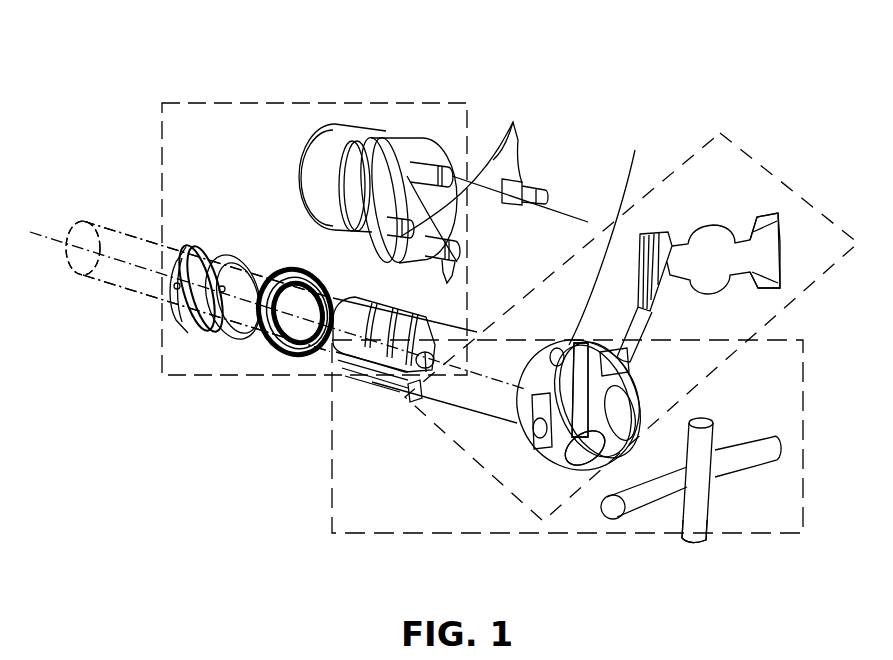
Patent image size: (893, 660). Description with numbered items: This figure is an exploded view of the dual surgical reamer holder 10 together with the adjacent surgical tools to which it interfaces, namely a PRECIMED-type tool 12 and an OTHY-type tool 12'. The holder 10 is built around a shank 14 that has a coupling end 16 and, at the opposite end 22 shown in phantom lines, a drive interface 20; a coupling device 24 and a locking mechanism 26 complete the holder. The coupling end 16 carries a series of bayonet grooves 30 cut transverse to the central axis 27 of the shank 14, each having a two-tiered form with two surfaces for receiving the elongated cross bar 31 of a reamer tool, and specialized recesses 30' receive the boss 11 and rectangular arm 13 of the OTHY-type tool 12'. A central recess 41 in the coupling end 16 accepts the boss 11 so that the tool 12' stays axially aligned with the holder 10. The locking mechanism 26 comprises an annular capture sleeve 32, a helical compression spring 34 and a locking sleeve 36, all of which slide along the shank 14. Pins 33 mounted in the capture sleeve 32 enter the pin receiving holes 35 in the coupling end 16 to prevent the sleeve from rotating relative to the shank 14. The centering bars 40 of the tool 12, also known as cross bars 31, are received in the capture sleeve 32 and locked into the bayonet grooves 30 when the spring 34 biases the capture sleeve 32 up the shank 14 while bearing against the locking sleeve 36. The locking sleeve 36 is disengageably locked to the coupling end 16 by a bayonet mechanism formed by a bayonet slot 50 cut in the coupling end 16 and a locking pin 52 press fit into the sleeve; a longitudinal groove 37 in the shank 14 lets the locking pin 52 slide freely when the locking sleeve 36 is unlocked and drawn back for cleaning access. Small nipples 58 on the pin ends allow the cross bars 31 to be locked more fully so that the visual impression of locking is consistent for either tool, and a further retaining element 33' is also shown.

The dual surgical reamer holder 10 is at (578, 131).
The boss 11 is at (727, 297).
The surgical tool 12 is at (710, 242).
The surgical tool 12' is at (740, 546).
The rectangular arm 13 is at (778, 214).
The shank 14 is at (497, 278).
The coupling end 16 is at (560, 463).
The drive interface 20 is at (117, 283).
The opposite end 22 is at (198, 319).
The coupling device 24 is at (616, 479).
The locking mechanism 26 is at (272, 102).
The central axis 27 is at (48, 229).
The bayonet grooves 30 is at (567, 426).
The specialized recesses 30' is at (546, 333).
The cross bar 31 is at (720, 437).
The capture sleeve 32 is at (353, 128).
The pins 33 is at (441, 284).
The retaining hook 33' is at (461, 166).
The helical compression spring 34 is at (310, 365).
The pin receiving holes 35 is at (614, 231).
The locking sleeve 36 is at (190, 245).
The longitudinal groove 37 is at (380, 380).
The centering bars 40 is at (722, 425).
The central recess 41 is at (612, 390).
The bayonet slot 50 is at (413, 392).
The locking pin 52 is at (228, 338).
The nipples 58 is at (392, 243).